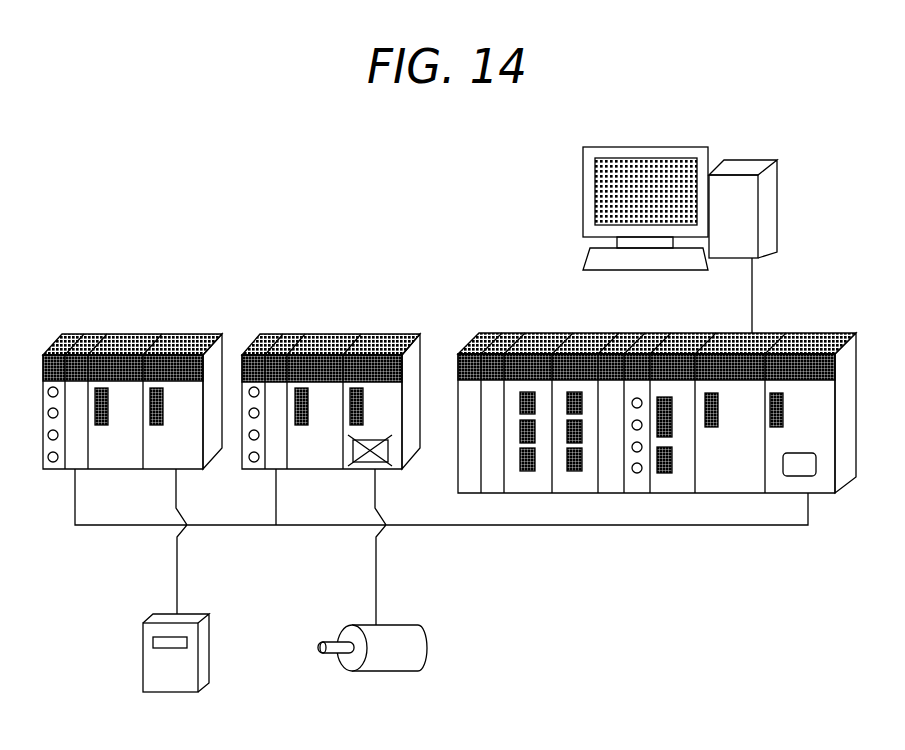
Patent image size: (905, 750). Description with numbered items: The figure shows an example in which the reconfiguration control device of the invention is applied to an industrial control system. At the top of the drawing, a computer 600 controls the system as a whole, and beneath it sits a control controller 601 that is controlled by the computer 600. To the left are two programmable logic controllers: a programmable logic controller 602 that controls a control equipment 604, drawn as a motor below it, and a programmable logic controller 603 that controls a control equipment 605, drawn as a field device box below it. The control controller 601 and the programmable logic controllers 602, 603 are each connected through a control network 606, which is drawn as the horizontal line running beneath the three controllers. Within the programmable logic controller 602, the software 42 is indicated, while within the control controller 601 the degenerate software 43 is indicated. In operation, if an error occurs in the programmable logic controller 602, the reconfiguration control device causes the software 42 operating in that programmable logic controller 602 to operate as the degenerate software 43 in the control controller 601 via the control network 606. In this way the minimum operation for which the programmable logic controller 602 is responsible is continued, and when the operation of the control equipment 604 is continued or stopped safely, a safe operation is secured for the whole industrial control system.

The computer 600 is at (757, 160).
The control controller 601 is at (657, 401).
The programmable logic controller 602 is at (331, 389).
The programmable logic controller 603 is at (192, 334).
The control equipment 604 is at (398, 624).
The control equipment 605 is at (211, 614).
The control network 606 is at (700, 525).
The software 42 is at (368, 440).
The degenerate software 43 is at (797, 453).